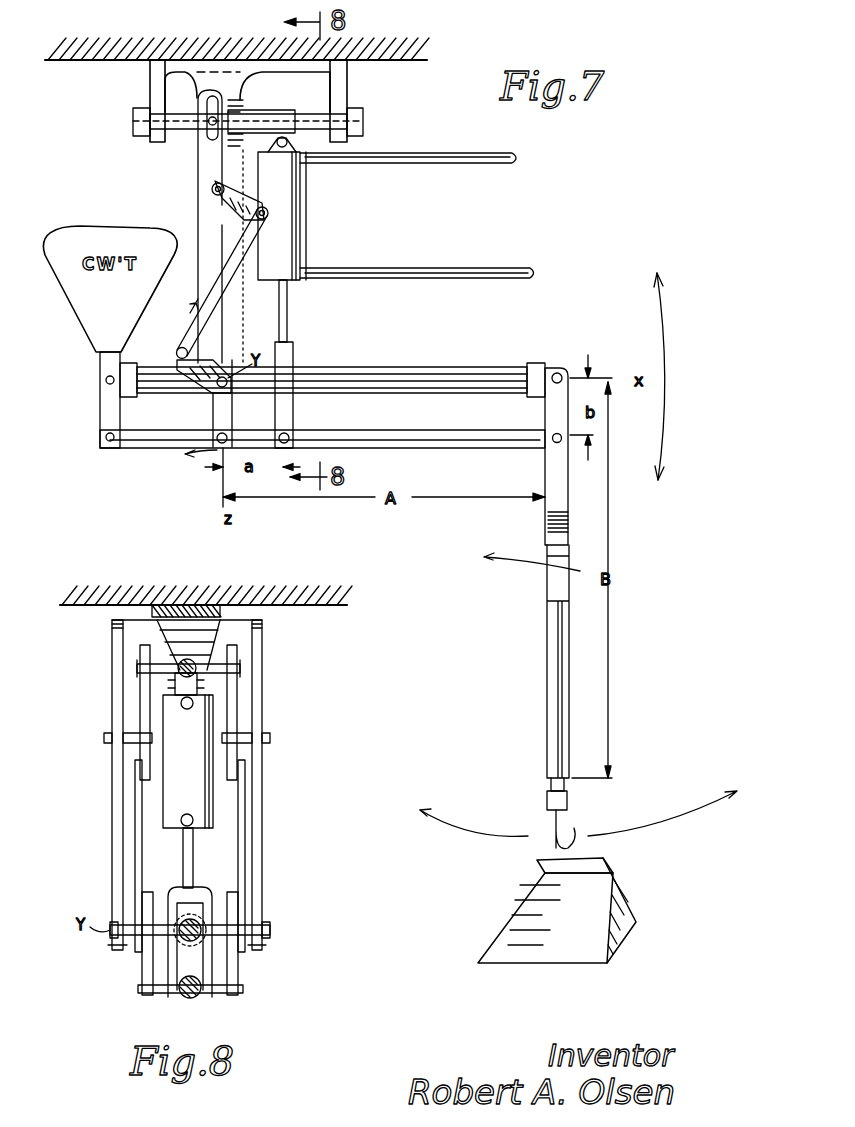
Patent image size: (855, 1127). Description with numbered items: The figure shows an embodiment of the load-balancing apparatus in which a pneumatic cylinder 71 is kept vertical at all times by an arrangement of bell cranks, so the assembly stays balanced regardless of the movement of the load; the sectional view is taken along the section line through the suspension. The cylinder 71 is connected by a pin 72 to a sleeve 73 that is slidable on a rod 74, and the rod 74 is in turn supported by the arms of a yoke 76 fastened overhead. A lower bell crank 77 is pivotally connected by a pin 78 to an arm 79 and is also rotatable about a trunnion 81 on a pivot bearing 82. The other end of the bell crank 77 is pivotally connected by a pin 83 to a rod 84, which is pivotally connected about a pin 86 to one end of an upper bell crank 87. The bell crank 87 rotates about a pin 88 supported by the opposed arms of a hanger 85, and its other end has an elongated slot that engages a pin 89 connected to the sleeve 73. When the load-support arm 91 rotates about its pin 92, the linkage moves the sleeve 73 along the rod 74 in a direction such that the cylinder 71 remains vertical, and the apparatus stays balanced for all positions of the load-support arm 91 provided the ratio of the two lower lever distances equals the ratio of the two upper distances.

In FIG. 7, the cylinder 71 is at (307, 225).
In FIG. 8, the cylinder 71 is at (170, 806).
In FIG. 8, the pin 72 is at (175, 688).
In FIG. 7, the sleeve 73 is at (288, 127).
In FIG. 8, the sleeve 73 is at (198, 665).
In FIG. 7, the rod 74 is at (330, 118).
In FIG. 8, the rod 74 is at (200, 671).
In FIG. 7, the yoke 76 is at (345, 83).
In FIG. 8, the yoke 76 is at (225, 623).
In FIG. 7, the bell crank 77 is at (232, 418).
In FIG. 8, the bell crank 77 is at (143, 968).
In FIG. 7, the pin 78 is at (292, 436).
In FIG. 8, the pin 78 is at (165, 995).
In FIG. 7, the arm 79 is at (148, 449).
In FIG. 8, the arm 79 is at (195, 998).
In FIG. 7, the trunnion 81 is at (185, 398).
In FIG. 7, the pivot bearing 82 is at (212, 395).
In FIG. 7, the pin 83 is at (177, 357).
In FIG. 8, the pin 83 is at (160, 896).
In FIG. 7, the rod 84 is at (212, 297).
In FIG. 7, the hanger 85 is at (207, 215).
In FIG. 8, the hanger 85 is at (118, 715).
In FIG. 7, the pin 86 is at (270, 210).
In FIG. 7, the bell crank 87 is at (236, 203).
In FIG. 7, the pin 88 is at (211, 192).
In FIG. 8, the pin 88 is at (104, 740).
In FIG. 7, the pin 89 is at (216, 122).
In FIG. 8, the pin 89 is at (152, 660).
In FIG. 7, the load-support arm 91 is at (552, 668).
In FIG. 7, the pin 92 is at (557, 376).